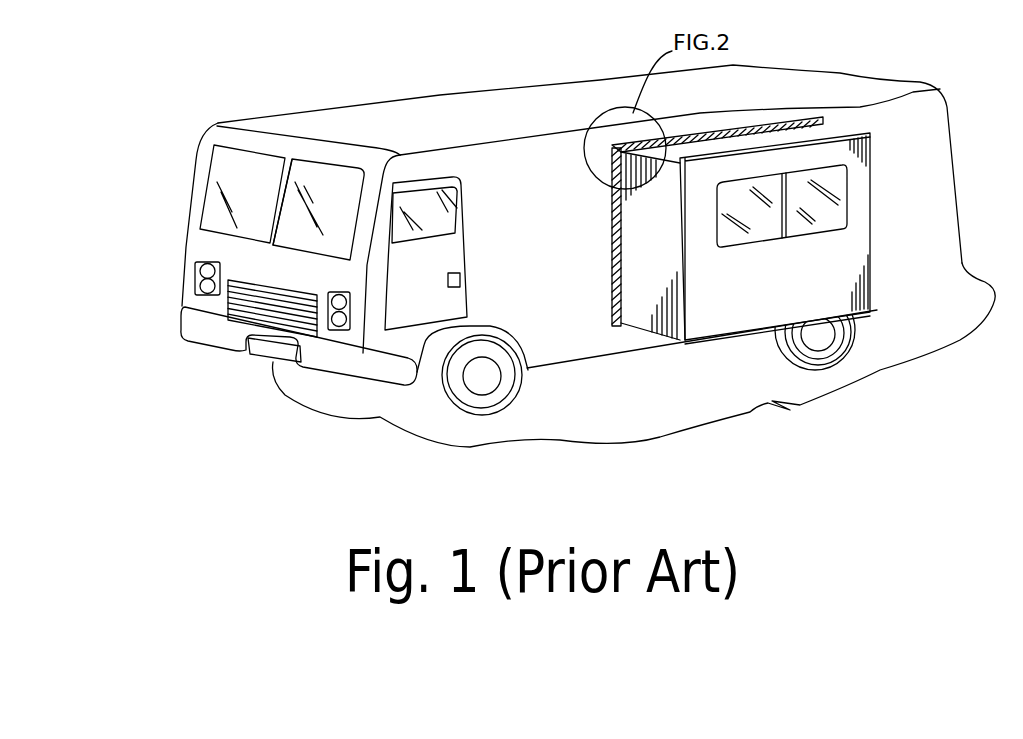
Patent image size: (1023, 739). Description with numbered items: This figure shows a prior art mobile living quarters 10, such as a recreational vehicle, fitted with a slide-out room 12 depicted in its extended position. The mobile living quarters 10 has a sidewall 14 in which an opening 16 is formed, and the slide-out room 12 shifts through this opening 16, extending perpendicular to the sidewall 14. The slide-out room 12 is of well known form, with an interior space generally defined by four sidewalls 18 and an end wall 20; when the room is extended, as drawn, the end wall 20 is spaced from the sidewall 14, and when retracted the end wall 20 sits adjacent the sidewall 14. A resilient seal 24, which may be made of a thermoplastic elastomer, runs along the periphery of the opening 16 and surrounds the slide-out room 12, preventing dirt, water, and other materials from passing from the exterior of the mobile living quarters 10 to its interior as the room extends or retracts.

The mobile living quarters 10 is at (513, 113).
The slide-out room 12 is at (810, 290).
The sidewall 14 is at (575, 327).
The opening 16 is at (888, 101).
The sidewalls 18 is at (648, 300).
The end wall 20 is at (722, 310).
The resilient seal 24 is at (778, 123).